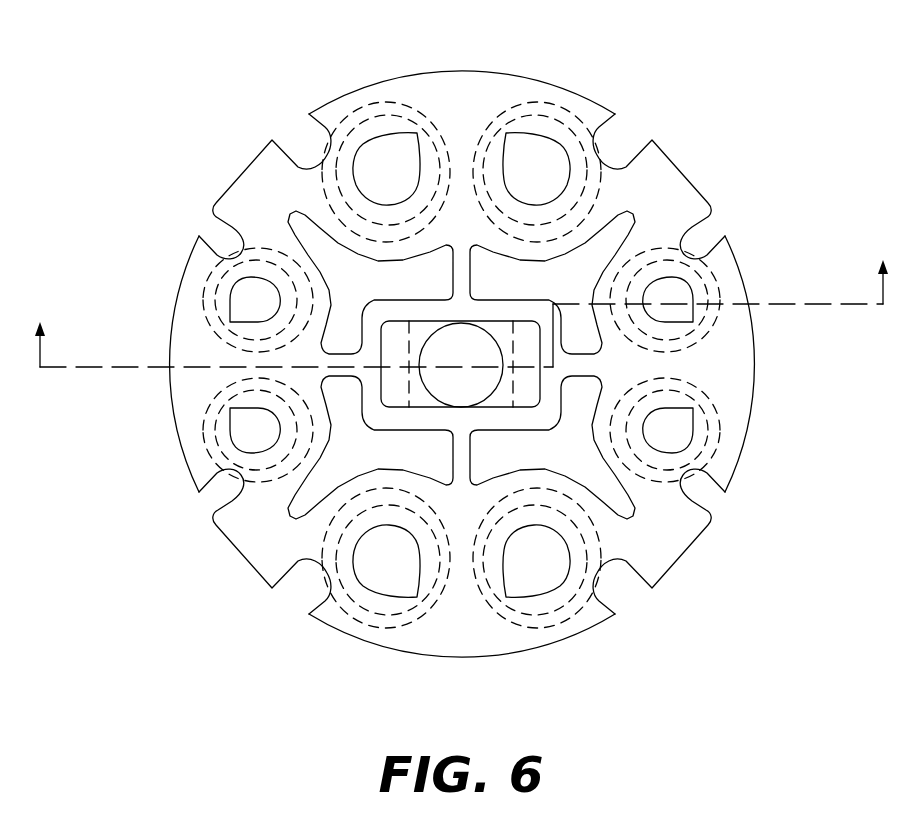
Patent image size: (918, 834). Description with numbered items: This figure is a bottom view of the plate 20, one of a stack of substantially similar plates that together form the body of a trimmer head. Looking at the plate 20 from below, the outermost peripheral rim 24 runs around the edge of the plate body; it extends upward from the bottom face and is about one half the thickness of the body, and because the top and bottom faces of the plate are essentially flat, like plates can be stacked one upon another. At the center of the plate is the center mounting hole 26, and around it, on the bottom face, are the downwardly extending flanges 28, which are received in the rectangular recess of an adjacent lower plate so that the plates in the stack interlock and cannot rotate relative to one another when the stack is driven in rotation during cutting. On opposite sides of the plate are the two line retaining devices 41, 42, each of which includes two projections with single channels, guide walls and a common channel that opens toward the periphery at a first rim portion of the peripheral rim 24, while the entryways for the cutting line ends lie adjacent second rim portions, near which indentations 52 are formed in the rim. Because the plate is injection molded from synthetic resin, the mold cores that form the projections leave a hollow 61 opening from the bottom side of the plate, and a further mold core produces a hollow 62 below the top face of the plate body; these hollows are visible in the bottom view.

The plate 20 is at (462, 369).
The outermost peripheral rim 24 is at (560, 641).
The center mounting hole 26 is at (443, 358).
The flanges 28 is at (527, 400).
The line retaining device 41 is at (510, 70).
The line retaining device 42 is at (150, 351).
The indentations 52 is at (232, 228).
The hollow 61 is at (403, 172).
The hollow 62 is at (461, 365).